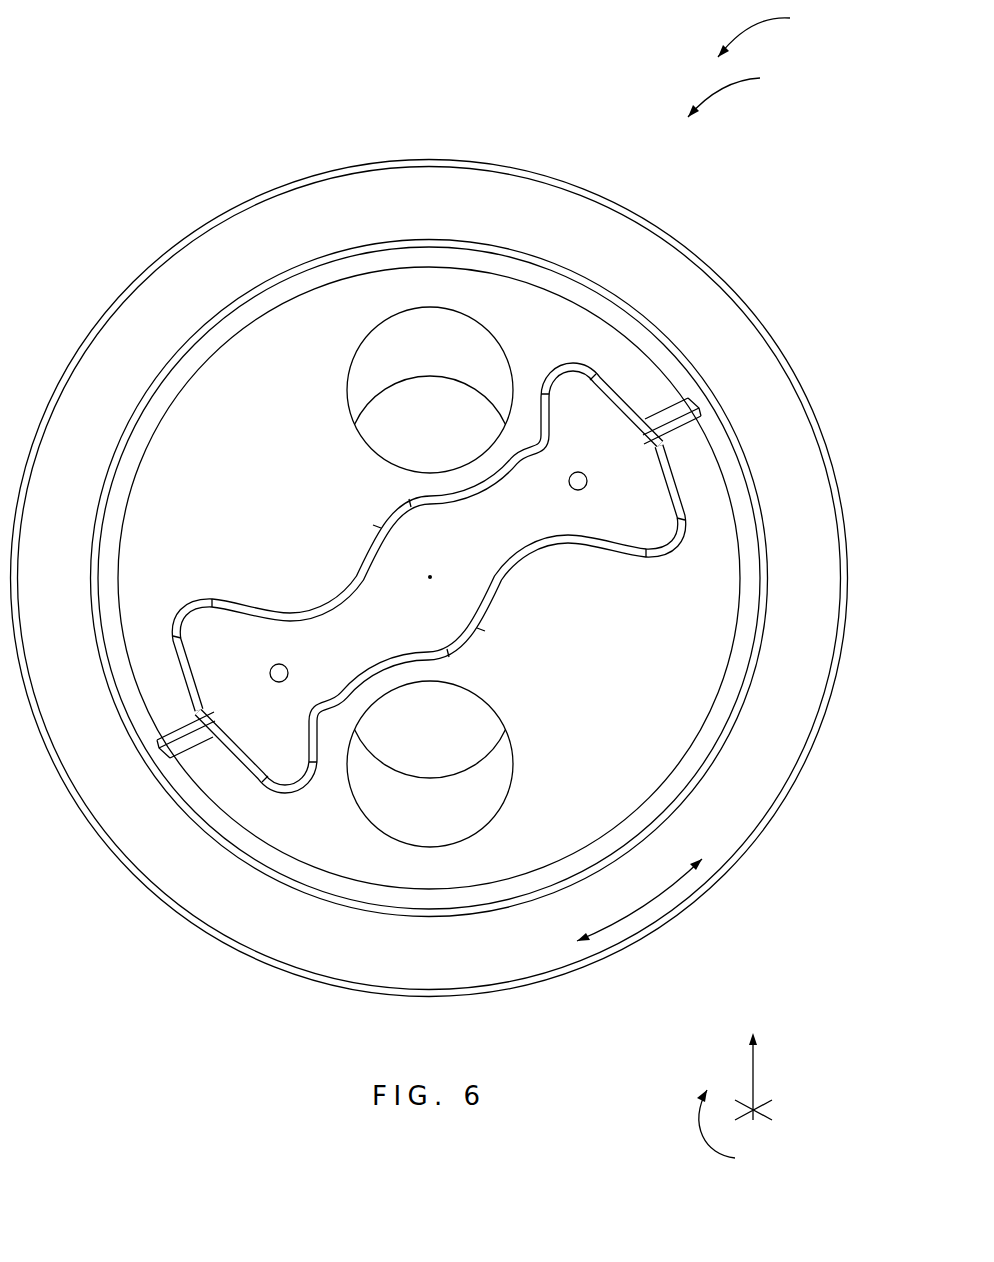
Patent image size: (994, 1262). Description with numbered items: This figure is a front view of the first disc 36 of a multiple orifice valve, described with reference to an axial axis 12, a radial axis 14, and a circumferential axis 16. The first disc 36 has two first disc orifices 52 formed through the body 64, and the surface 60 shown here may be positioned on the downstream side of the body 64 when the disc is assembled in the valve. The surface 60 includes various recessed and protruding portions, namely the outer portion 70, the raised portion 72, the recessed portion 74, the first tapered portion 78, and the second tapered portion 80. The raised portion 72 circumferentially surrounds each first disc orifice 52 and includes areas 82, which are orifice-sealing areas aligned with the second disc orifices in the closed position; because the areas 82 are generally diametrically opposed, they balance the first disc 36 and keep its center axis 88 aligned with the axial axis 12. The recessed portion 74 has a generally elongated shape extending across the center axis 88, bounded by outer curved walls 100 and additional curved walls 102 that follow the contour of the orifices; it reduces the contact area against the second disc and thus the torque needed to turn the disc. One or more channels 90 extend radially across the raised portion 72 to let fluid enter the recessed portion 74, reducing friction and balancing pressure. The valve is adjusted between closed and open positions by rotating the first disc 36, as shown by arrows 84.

The first disc 36 is at (769, 31).
The surface 60 is at (741, 92).
The body 64 is at (698, 256).
The outer portion 70 is at (728, 336).
The first tapered portion 78 is at (577, 290).
The raised portion 72 is at (712, 632).
The areas 82 is at (254, 460).
The first disc orifices 52 is at (444, 425).
The recessed portion 74 is at (518, 575).
The second tapered portion 80 is at (429, 578).
The additional curved walls 102 is at (547, 547).
The outer curved walls 100 is at (618, 405).
The channels 90 is at (698, 394).
The center axis 88 is at (432, 579).
The arrows 84 is at (647, 910).
The radial axis 14 is at (753, 1077).
The axial axis 12 is at (766, 1118).
The circumferential axis 16 is at (703, 1143).